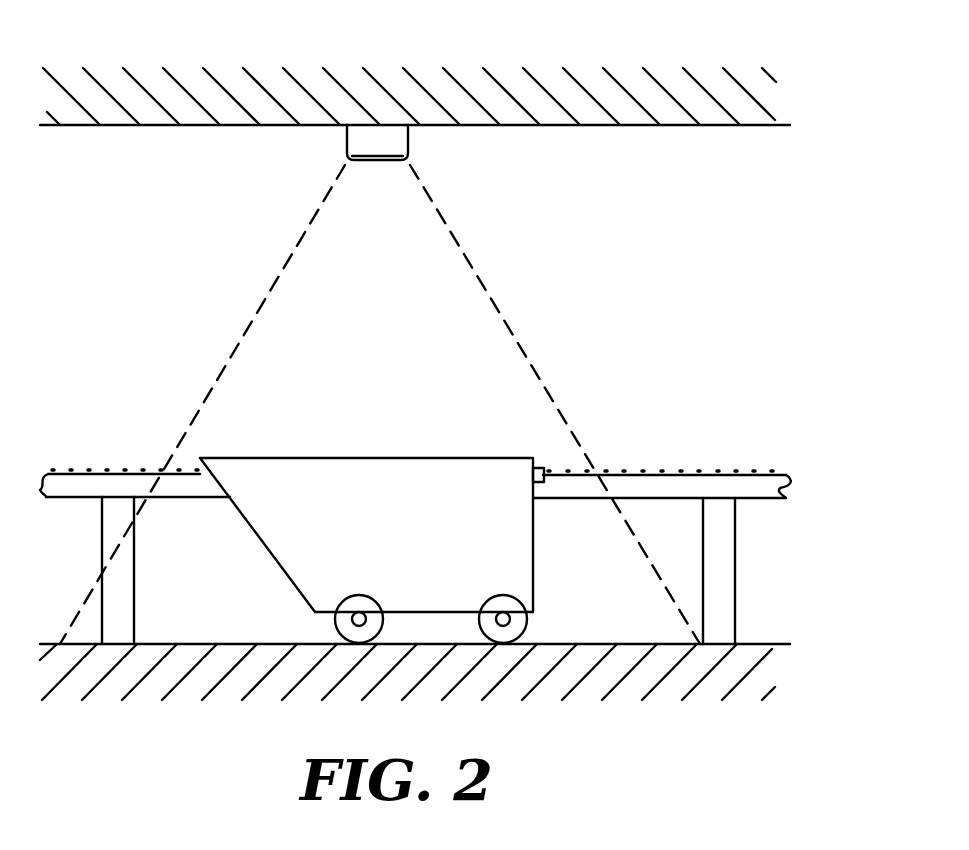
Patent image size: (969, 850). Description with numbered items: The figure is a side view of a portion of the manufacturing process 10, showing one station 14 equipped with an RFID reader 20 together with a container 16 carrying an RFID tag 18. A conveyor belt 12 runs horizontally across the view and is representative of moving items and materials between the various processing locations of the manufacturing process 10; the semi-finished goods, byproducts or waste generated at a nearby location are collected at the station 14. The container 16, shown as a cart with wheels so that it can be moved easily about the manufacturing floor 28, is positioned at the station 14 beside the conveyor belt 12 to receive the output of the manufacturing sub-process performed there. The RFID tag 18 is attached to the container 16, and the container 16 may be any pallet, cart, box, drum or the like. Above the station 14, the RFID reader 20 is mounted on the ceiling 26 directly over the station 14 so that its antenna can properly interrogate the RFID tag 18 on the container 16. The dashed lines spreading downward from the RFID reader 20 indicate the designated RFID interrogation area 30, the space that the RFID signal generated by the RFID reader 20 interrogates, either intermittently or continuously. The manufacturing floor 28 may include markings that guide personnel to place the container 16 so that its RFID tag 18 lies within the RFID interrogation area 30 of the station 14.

The manufacturing process 10 is at (755, 415).
The conveyor belt 12 is at (779, 489).
The station 14 is at (237, 630).
The container 16 is at (352, 483).
The RFID tag 18 is at (541, 466).
The RFID reader 20 is at (378, 137).
The ceiling 26 is at (150, 125).
The manufacturing floor 28 is at (757, 642).
The RFID interrogation area 30 is at (495, 300).